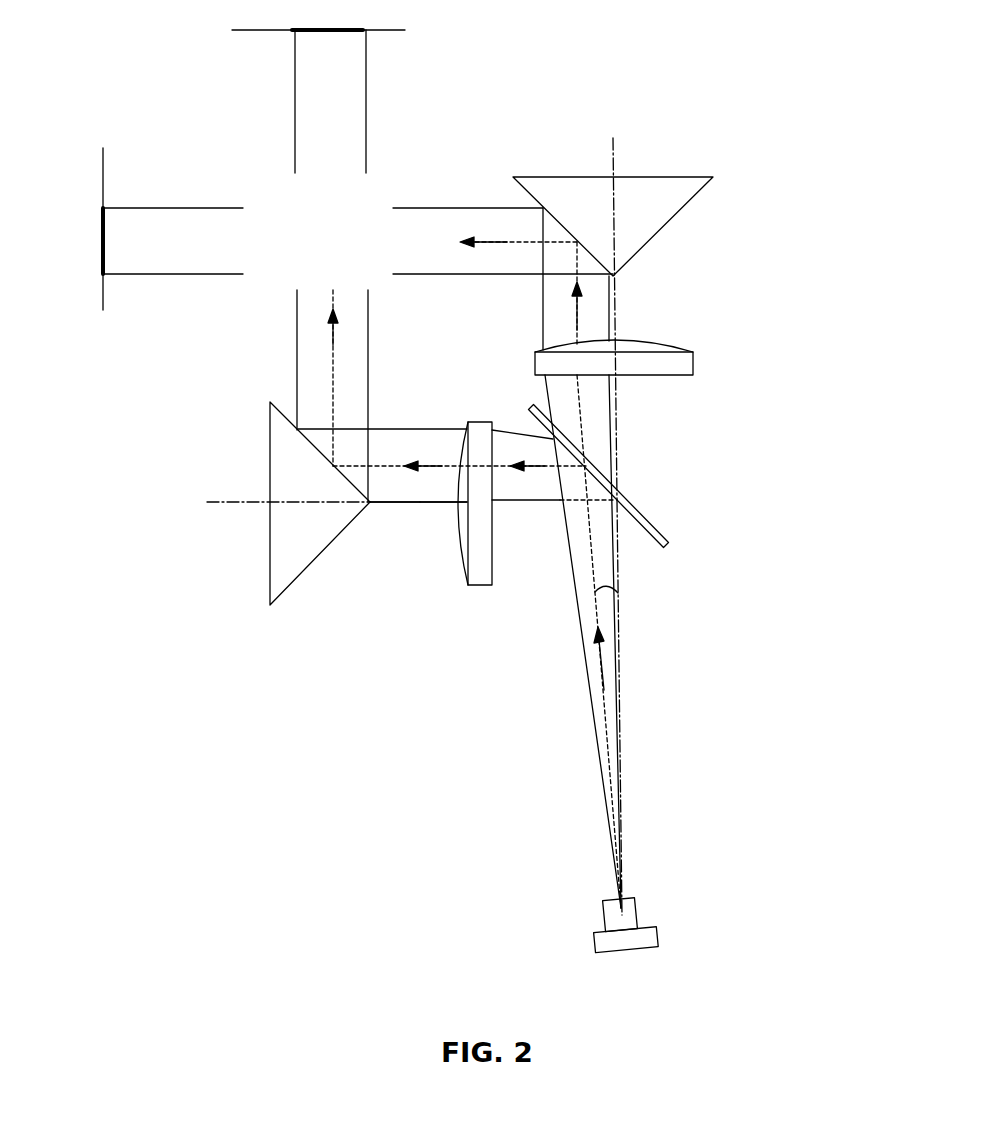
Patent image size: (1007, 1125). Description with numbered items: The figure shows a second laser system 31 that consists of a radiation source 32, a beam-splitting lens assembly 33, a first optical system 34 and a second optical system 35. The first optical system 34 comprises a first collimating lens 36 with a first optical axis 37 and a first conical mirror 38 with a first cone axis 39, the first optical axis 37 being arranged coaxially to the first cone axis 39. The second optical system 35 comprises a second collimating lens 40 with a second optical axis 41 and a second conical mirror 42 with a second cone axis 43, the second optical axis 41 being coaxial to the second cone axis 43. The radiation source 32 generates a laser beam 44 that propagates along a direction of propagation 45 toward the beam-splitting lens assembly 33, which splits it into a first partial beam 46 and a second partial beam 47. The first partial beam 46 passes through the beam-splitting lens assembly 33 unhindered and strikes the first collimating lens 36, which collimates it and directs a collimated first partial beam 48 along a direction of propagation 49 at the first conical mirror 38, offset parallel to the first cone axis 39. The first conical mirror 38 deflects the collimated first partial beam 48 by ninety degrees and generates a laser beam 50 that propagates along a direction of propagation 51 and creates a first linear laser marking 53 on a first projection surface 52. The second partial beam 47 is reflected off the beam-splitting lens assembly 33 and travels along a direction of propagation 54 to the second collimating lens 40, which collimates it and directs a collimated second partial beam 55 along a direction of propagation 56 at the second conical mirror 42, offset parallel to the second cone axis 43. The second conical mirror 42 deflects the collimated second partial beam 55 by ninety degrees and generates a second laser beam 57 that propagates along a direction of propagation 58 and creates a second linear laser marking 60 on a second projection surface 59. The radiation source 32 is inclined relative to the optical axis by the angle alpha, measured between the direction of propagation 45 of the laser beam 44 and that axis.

The laser system 31 is at (748, 850).
The radiation source 32 is at (593, 942).
The beam-splitting lens assembly 33 is at (660, 530).
The first optical system 34 is at (738, 273).
The second optical system 35 is at (390, 692).
The first collimating lens 36 is at (682, 362).
The first optical axis 37 is at (613, 394).
The first conical mirror 38 is at (678, 188).
The first cone axis 39 is at (613, 136).
The second collimating lens 40 is at (483, 572).
The second optical axis 41 is at (440, 505).
The second conical mirror 42 is at (283, 572).
The second cone axis 43 is at (230, 507).
The laser beam 44 is at (597, 742).
The direction of propagation 45 is at (602, 658).
The first partial beam 46 is at (611, 452).
The second partial beam 47 is at (518, 505).
The collimated first partial beam 48 is at (543, 308).
The direction of propagation 49 is at (577, 310).
The laser beam 50 is at (435, 207).
The direction of propagation 51 is at (485, 240).
The first projection surface 52 is at (103, 170).
The first linear laser marking 53 is at (103, 237).
The direction of propagation 54 is at (543, 470).
The collimated second partial beam 55 is at (393, 505).
The direction of propagation 56 is at (435, 466).
The second laser beam 57 is at (297, 370).
The direction of propagation 58 is at (333, 342).
The second projection surface 59 is at (262, 32).
The second linear laser marking 60 is at (332, 32).